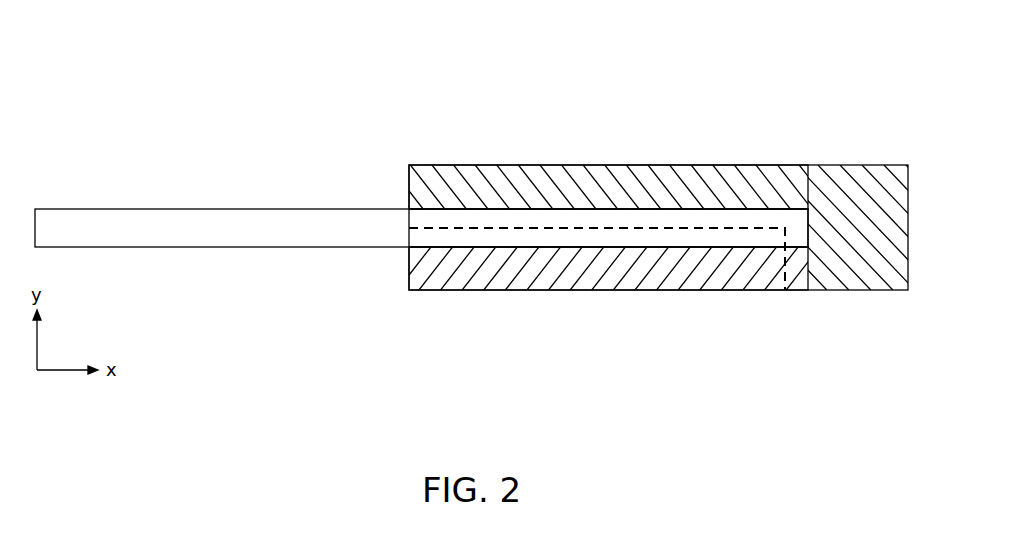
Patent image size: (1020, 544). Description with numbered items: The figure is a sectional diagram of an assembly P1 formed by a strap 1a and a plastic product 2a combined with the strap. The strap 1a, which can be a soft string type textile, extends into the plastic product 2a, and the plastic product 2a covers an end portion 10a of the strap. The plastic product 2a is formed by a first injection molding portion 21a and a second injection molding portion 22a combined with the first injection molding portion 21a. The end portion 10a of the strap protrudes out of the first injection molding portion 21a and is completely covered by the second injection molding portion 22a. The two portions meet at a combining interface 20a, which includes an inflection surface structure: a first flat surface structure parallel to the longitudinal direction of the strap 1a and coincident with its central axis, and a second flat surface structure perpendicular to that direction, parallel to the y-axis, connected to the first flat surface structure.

The assembly P1 is at (168, 92).
The strap 1a is at (135, 209).
The plastic product 2a is at (655, 207).
The end portion 10a is at (808, 217).
The combining interface 20a is at (598, 229).
The first injection molding portion 21a is at (418, 270).
The second injection molding portion 22a is at (418, 190).